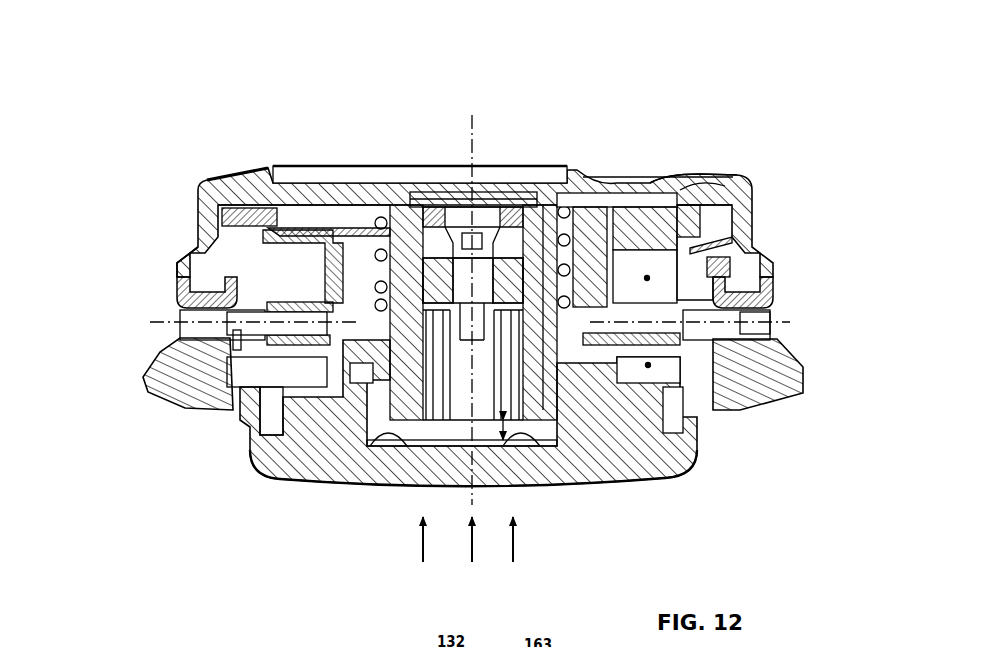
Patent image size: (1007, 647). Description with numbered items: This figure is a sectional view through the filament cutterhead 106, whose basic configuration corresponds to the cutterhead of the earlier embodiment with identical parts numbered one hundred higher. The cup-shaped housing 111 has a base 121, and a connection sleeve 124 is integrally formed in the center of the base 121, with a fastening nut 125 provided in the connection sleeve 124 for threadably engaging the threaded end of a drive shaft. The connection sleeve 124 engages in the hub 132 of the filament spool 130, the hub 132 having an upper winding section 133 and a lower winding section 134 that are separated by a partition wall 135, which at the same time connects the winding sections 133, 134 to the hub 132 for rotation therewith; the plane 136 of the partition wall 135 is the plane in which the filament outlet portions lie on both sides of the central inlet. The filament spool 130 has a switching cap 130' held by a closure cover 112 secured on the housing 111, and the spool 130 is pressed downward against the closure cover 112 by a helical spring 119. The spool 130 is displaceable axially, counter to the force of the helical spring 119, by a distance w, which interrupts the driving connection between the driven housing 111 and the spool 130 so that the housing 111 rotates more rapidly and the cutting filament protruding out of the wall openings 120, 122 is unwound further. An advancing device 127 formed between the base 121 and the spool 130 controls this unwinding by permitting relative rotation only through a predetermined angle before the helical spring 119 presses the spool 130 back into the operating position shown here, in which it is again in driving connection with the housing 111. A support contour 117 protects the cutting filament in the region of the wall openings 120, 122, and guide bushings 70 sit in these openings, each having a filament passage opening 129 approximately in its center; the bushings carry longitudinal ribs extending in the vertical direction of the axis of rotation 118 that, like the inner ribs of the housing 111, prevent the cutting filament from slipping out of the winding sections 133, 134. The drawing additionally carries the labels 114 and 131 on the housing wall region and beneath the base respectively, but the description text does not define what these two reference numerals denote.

The filament cutterhead 106 is at (262, 148).
The cup-shaped housing 111 is at (208, 178).
The closure cover 112 is at (200, 383).
The housing wall 114 is at (200, 232).
The support contour 117 is at (183, 267).
The axis of rotation 118 is at (465, 118).
The helical spring 119 is at (560, 268).
The wall opening 120 is at (785, 326).
The base 121 is at (356, 183).
The wall opening 122 is at (165, 326).
The connection sleeve 124 is at (498, 270).
The fastening nut 125 is at (463, 273).
The advancing device 127 is at (238, 208).
The filament passage opening 129 is at (227, 335).
The filament spool 130 is at (637, 175).
The switching cap 130' is at (473, 495).
The flow arrows 131 is at (493, 543).
The hub 132 is at (587, 273).
The upper winding section 133 is at (647, 278).
The lower winding section 134 is at (648, 365).
The partition wall 135 is at (687, 467).
The plane 136 is at (302, 322).
The guide bushing 70 is at (200, 297).